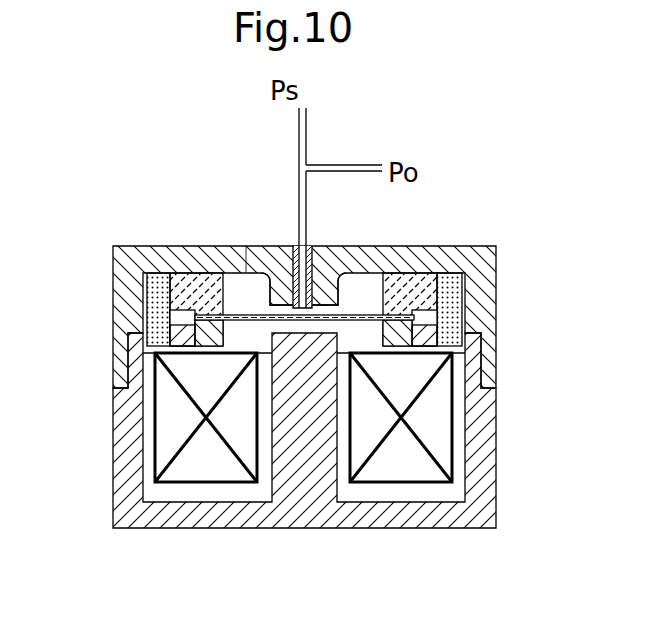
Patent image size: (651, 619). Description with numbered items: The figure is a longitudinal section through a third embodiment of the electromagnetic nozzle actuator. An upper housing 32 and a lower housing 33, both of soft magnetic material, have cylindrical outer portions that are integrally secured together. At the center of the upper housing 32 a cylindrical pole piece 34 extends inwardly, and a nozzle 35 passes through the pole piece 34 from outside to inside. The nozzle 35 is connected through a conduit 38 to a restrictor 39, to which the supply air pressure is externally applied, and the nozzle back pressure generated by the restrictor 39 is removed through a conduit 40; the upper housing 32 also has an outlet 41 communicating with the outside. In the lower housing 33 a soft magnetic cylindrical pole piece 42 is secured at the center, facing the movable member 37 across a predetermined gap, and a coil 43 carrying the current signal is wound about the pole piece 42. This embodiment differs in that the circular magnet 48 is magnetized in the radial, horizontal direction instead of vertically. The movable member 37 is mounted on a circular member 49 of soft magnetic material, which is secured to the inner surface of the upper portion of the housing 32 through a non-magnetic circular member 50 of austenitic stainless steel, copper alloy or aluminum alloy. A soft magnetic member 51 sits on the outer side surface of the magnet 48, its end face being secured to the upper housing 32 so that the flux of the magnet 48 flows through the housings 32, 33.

The upper housing 32 is at (485, 272).
The lower housing 33 is at (475, 490).
The cylindrical pole piece 34 is at (345, 287).
The nozzle 35 is at (284, 246).
The movable member 37 is at (363, 320).
The conduit 38 is at (306, 217).
The restrictor 39 is at (307, 136).
The conduit 40 is at (345, 165).
The outlet 41 is at (246, 270).
The cylindrical pole piece 42 is at (277, 433).
The coil 43 is at (402, 467).
The circular magnet 48 is at (177, 337).
The circular member 49 is at (212, 322).
The circular member 50 is at (197, 285).
The member 51 is at (167, 287).